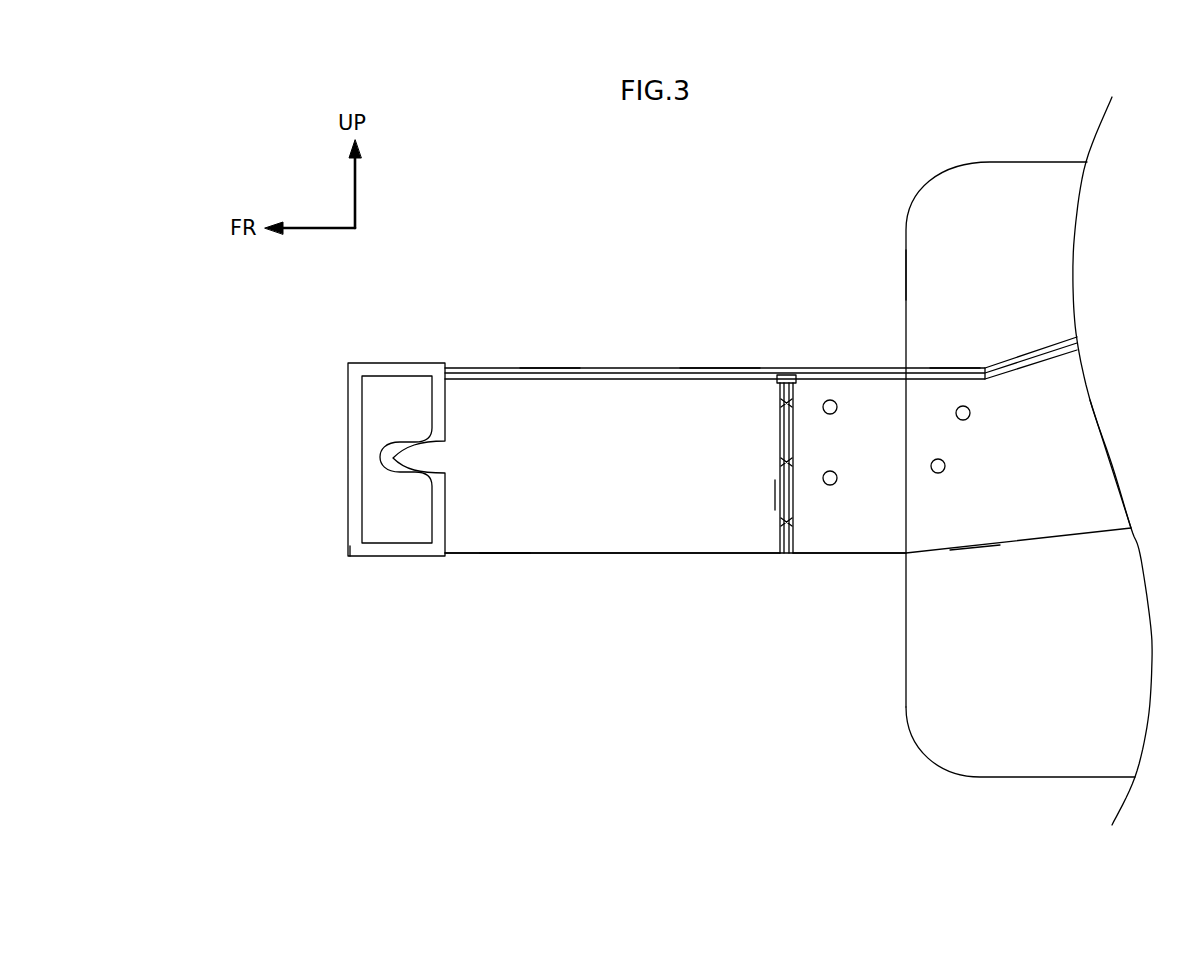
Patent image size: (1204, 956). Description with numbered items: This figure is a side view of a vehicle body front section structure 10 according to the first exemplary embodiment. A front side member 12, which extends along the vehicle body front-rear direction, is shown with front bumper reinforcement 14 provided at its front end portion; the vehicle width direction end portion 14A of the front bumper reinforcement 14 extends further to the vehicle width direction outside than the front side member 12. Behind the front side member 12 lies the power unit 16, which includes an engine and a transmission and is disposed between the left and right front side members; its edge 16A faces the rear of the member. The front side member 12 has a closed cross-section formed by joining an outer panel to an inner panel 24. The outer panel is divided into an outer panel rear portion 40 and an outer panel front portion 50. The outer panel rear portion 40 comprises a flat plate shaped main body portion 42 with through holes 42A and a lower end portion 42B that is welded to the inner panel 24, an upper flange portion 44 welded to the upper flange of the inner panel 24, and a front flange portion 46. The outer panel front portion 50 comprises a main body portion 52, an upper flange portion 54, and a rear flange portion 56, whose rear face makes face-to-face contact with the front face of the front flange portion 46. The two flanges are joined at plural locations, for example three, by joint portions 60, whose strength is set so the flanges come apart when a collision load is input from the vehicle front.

The vehicle body front section structure 10 is at (680, 604).
The front side member 12 is at (609, 368).
The front bumper reinforcement 14 is at (347, 470).
The vehicle width direction end portion 14A is at (358, 549).
The power unit 16 is at (1001, 160).
The front edge of side body panel 16A is at (905, 275).
The inner panel 24 is at (697, 367).
The outer panel rear portion 40 is at (848, 532).
The main body portion 42 is at (1103, 478).
The through holes 42A is at (835, 412).
The lower end portion 42B is at (965, 540).
The upper flange portion 44 is at (940, 380).
The front flange portion 46 is at (795, 502).
The outer panel front portion 50 is at (575, 532).
The main body portion 52 is at (506, 528).
The upper flange portion 54 is at (552, 379).
The rear flange portion 56 is at (780, 492).
The joint portions 60 is at (793, 402).